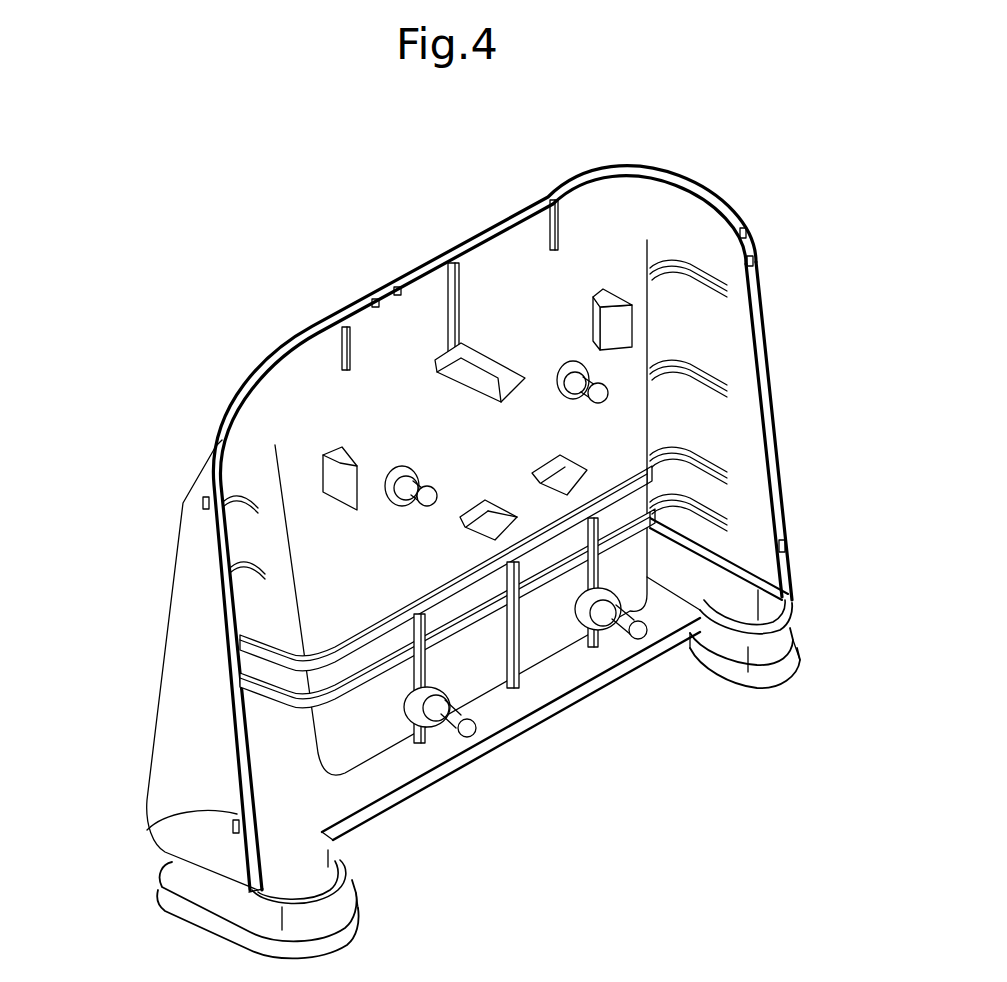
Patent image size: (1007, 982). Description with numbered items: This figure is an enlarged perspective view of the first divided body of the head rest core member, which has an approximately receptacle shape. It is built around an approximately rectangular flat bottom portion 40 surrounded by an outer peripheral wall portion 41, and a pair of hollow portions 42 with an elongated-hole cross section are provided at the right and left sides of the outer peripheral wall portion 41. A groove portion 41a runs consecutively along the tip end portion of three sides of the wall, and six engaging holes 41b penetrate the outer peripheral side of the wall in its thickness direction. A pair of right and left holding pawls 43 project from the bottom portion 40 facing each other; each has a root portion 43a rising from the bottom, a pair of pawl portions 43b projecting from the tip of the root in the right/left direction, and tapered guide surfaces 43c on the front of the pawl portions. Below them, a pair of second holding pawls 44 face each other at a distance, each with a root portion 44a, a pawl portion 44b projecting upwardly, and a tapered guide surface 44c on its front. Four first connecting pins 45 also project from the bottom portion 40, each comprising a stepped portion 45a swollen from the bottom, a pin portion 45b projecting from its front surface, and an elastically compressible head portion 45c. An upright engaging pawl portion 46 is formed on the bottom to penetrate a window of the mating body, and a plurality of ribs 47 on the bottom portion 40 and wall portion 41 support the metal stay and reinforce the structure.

The bottom portion 40 is at (317, 556).
The outer peripheral wall portion 41 is at (200, 677).
The groove portion 41a is at (771, 357).
The engaging hole 41b is at (147, 830).
The hollow portion 42 is at (316, 867).
The holding pawl 43 is at (327, 472).
The root portion 43a is at (597, 305).
The pawl portion 43b is at (614, 302).
The tapered guide surface 43c is at (606, 326).
The second holding pawl 44 is at (581, 463).
The root portion 44a is at (462, 520).
The pawl portion 44b is at (506, 508).
The tapered guide surface 44c is at (490, 547).
The first connecting pin 45 is at (566, 398).
The stepped portion 45a is at (395, 502).
The pin portion 45b is at (404, 468).
The head portion 45c is at (432, 487).
The engaging pawl portion 46 is at (452, 378).
The rib 47 is at (398, 620).